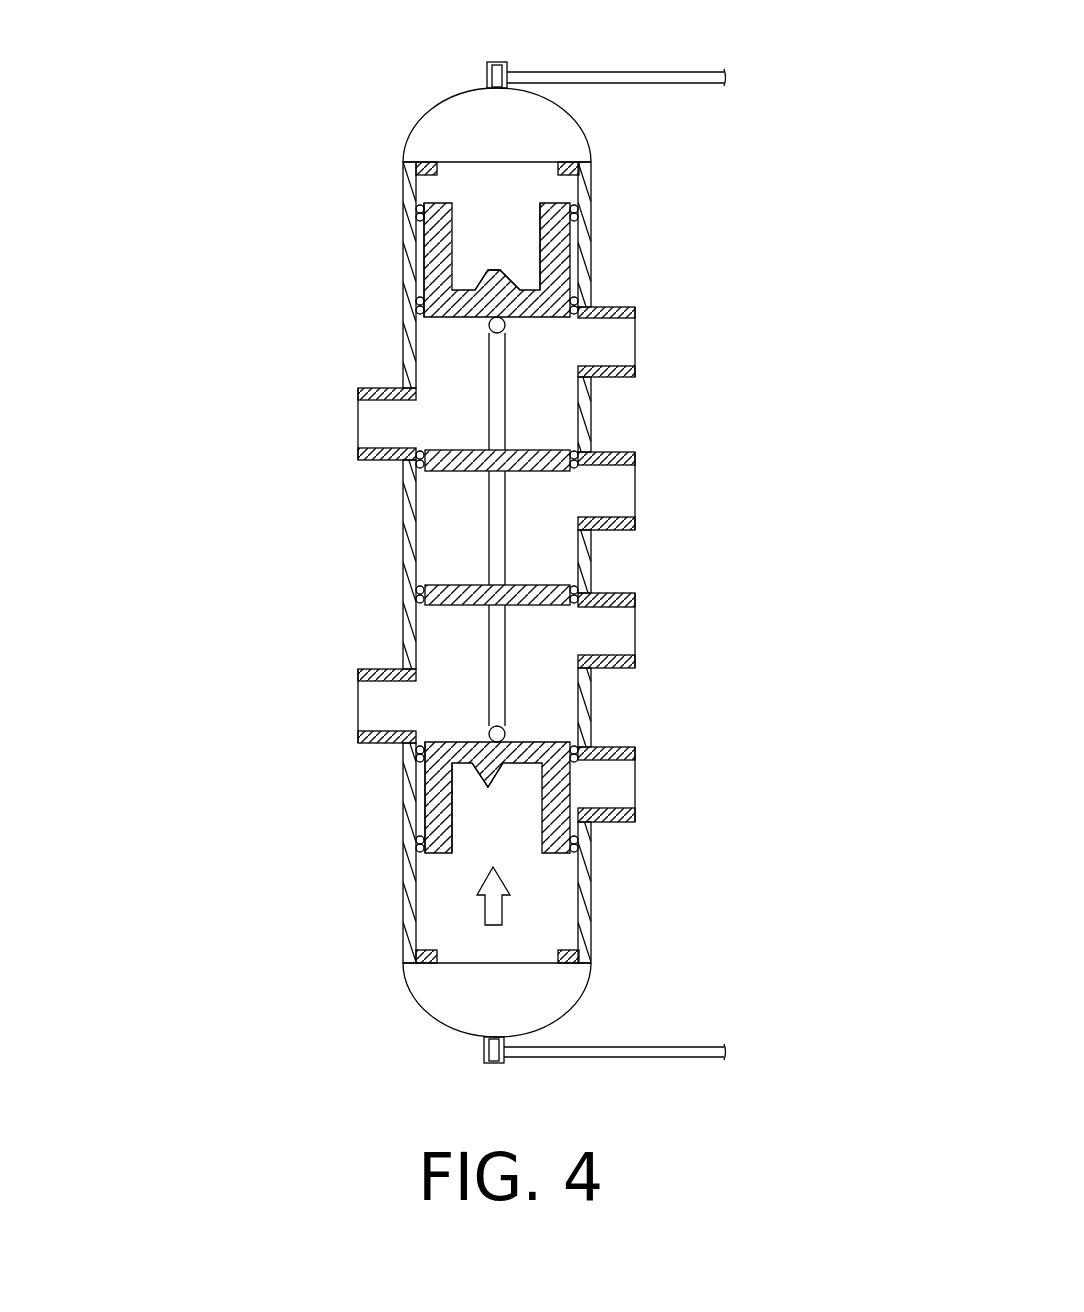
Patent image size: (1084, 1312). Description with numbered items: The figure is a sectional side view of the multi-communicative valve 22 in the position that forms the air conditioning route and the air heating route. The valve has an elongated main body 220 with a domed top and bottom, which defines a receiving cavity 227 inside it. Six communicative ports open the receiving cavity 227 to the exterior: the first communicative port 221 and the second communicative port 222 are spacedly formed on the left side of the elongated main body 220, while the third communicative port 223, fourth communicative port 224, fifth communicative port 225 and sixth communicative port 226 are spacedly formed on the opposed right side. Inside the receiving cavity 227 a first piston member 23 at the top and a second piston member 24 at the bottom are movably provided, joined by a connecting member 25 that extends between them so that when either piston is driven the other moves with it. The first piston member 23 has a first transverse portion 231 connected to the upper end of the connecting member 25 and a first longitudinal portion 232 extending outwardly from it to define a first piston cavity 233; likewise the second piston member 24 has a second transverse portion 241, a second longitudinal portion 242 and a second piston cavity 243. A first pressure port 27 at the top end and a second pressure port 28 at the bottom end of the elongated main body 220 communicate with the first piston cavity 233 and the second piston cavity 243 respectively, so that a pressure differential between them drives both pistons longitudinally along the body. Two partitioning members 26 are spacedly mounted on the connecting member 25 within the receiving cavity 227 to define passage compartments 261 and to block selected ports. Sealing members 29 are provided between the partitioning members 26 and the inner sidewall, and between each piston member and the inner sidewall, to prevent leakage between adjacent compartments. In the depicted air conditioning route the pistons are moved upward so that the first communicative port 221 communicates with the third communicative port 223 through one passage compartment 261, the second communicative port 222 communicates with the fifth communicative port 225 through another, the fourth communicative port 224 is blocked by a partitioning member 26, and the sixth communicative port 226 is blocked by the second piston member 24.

The multi-communicative valve 22 is at (394, 183).
The elongated main body 220 is at (580, 550).
The first communicative port 221 is at (366, 425).
The second communicative port 222 is at (370, 710).
The third communicative port 223 is at (617, 337).
The fourth communicative port 224 is at (618, 497).
The fifth communicative port 225 is at (615, 638).
The sixth communicative port 226 is at (616, 787).
The receiving cavity 227 is at (557, 412).
The first piston member 23 is at (573, 267).
The first transverse portion 231 is at (498, 281).
The first longitudinal portion 232 is at (427, 252).
The first piston cavity 233 is at (531, 277).
The second piston member 24 is at (423, 818).
The second transverse portion 241 is at (558, 752).
The second longitudinal portion 242 is at (438, 783).
The second piston cavity 243 is at (470, 845).
The connecting member 25 is at (497, 548).
The partitioning member 26 is at (478, 449).
The passage compartment 261 is at (445, 355).
The first pressure port 27 is at (504, 57).
The second pressure port 28 is at (492, 1070).
The sealing member 29 is at (581, 296).